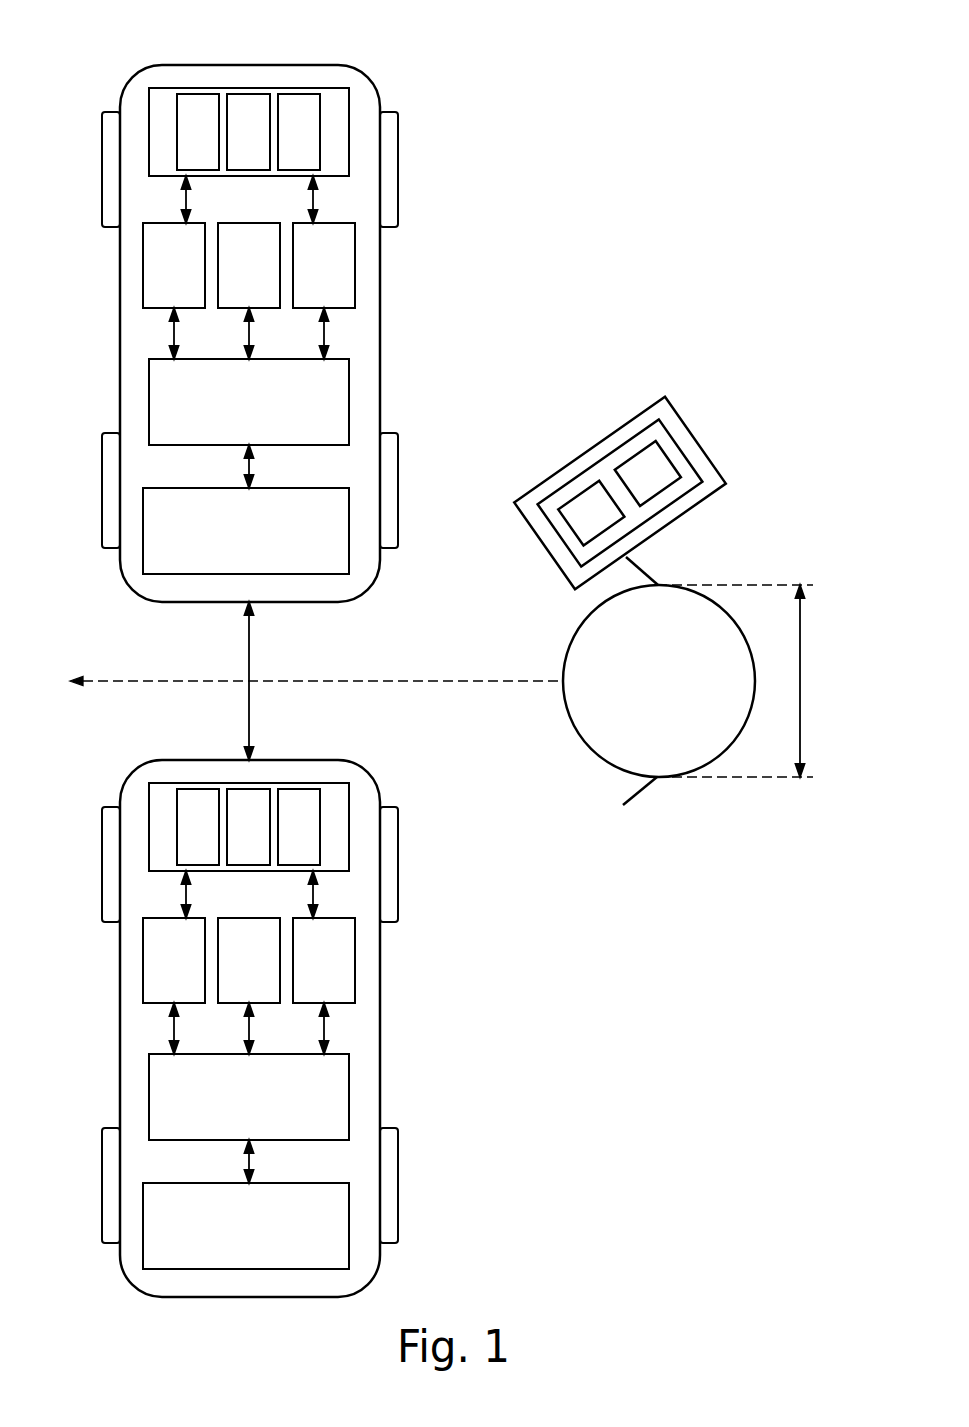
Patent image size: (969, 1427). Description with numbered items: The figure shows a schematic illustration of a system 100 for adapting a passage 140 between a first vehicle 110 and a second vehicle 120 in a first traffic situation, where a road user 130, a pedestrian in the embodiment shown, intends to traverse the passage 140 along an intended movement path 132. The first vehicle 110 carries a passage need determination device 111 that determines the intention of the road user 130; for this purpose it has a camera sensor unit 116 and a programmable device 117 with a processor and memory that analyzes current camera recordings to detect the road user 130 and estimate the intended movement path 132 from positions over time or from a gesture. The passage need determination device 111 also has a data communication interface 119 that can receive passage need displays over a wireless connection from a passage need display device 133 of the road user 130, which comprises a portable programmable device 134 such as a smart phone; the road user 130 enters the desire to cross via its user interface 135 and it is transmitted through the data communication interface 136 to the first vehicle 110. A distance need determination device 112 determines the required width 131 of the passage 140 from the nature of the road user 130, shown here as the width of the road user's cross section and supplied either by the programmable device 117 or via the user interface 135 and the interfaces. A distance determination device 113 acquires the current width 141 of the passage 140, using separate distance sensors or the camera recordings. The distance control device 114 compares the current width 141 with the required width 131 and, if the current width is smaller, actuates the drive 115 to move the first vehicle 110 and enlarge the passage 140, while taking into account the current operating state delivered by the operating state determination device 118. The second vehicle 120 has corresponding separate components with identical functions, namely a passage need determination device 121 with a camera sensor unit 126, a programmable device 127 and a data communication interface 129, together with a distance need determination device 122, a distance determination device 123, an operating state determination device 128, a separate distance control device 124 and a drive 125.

The system 100 is at (598, 66).
The first vehicle 110 is at (380, 963).
The passage need determination device 111 is at (308, 782).
The distance need determination device 112 is at (306, 976).
The distance determination device 113 is at (156, 976).
The distance control device 114 is at (231, 1111).
The drive 115 is at (228, 1239).
The camera sensor unit 116 is at (281, 839).
The programmable device 117 is at (230, 839).
The operating state determination device 118 is at (231, 976).
The data communication interface 119 is at (180, 839).
The second vehicle 120 is at (380, 247).
The passage need determination device 121 is at (307, 88).
The distance need determination device 122 is at (306, 281).
The distance determination device 123 is at (156, 281).
The distance control device 124 is at (231, 416).
The drive 125 is at (228, 544).
The camera sensor unit 126 is at (281, 144).
The programmable device 127 is at (230, 144).
The operating state determination device 128 is at (231, 281).
The data communication interface 129 is at (180, 144).
The road user 130 is at (641, 694).
The required width 131 is at (802, 687).
The intended movement path 132 is at (125, 682).
The passage need display device 133 is at (722, 465).
The portable programmable device 134 is at (638, 432).
The user interface 135 is at (656, 467).
The data communication interface 136 is at (585, 502).
The passage 140 is at (140, 652).
The current width 141 is at (251, 645).